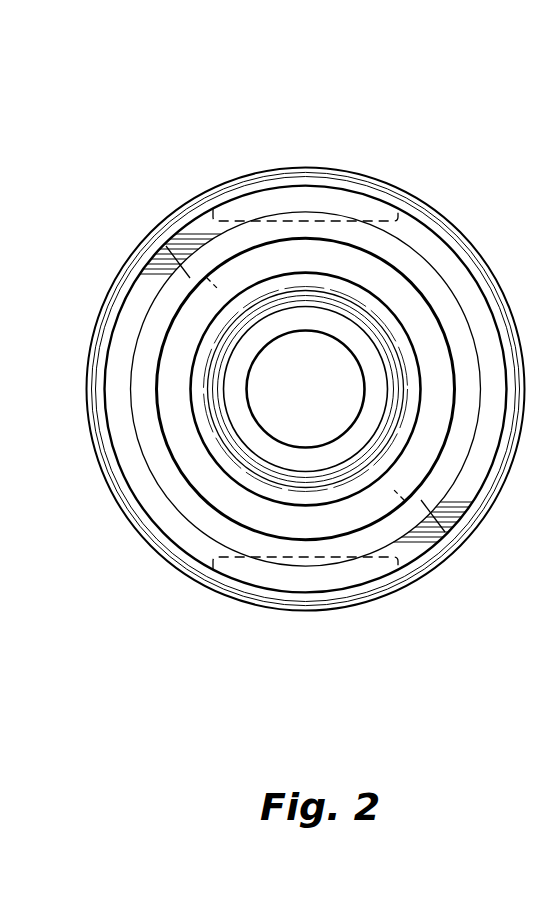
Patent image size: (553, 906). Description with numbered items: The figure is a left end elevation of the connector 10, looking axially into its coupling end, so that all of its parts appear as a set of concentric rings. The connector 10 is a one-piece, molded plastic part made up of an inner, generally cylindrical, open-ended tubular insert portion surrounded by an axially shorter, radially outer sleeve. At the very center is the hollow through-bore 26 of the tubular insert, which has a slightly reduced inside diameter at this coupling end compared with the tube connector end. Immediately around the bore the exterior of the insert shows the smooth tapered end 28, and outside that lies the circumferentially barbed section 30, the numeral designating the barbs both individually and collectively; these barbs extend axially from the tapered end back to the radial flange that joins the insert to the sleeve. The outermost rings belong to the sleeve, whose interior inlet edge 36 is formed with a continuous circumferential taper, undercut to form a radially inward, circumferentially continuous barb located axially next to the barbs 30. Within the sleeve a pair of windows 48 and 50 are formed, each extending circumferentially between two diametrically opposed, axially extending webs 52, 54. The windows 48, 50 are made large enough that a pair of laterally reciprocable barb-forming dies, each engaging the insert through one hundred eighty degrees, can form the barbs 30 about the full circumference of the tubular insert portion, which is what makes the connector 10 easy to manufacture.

The connector 10 is at (216, 154).
The through-bore 26 is at (318, 401).
The smooth tapered end 28 is at (205, 391).
The circumferentially barbed section 30 is at (360, 290).
The interior inlet edge 36 is at (212, 522).
The window 48 is at (163, 235).
The window 50 is at (421, 562).
The axially extending web 52 is at (335, 200).
The axially extending web 54 is at (322, 583).